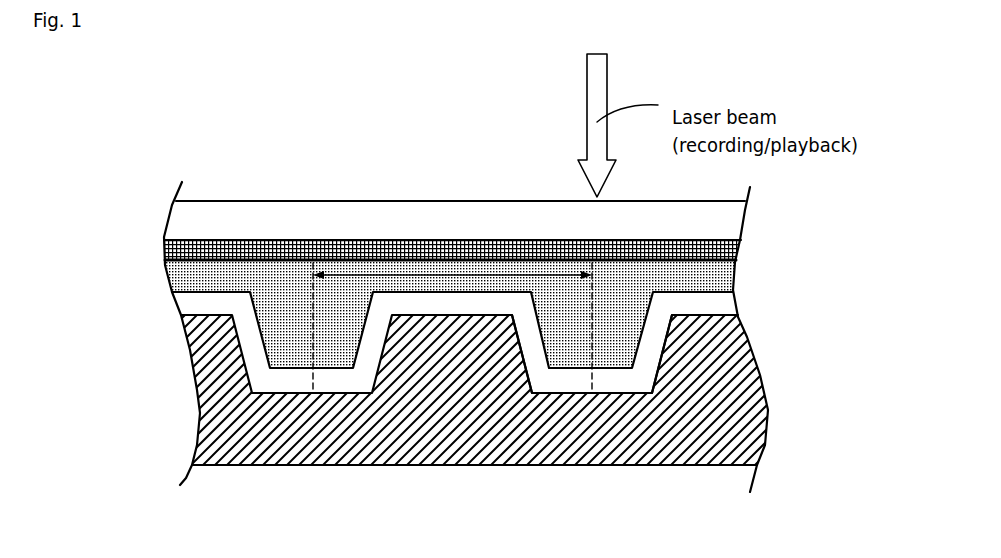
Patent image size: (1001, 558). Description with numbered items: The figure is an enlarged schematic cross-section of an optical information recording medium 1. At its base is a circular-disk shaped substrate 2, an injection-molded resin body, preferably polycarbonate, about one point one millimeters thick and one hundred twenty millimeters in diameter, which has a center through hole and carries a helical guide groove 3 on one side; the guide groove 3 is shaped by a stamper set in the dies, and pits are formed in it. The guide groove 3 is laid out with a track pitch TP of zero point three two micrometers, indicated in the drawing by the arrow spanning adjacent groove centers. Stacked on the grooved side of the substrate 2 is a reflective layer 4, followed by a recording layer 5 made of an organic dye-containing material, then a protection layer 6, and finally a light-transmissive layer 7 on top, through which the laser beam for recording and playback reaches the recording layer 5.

The optical information recording medium 1 is at (476, 193).
The substrate 2 is at (710, 400).
The guide groove 3 is at (585, 395).
The reflective layer 4 is at (723, 307).
The recording layer 5 is at (718, 282).
The protection layer 6 is at (737, 240).
The light-transmissive layer 7 is at (705, 212).
The track pitch TP is at (443, 278).